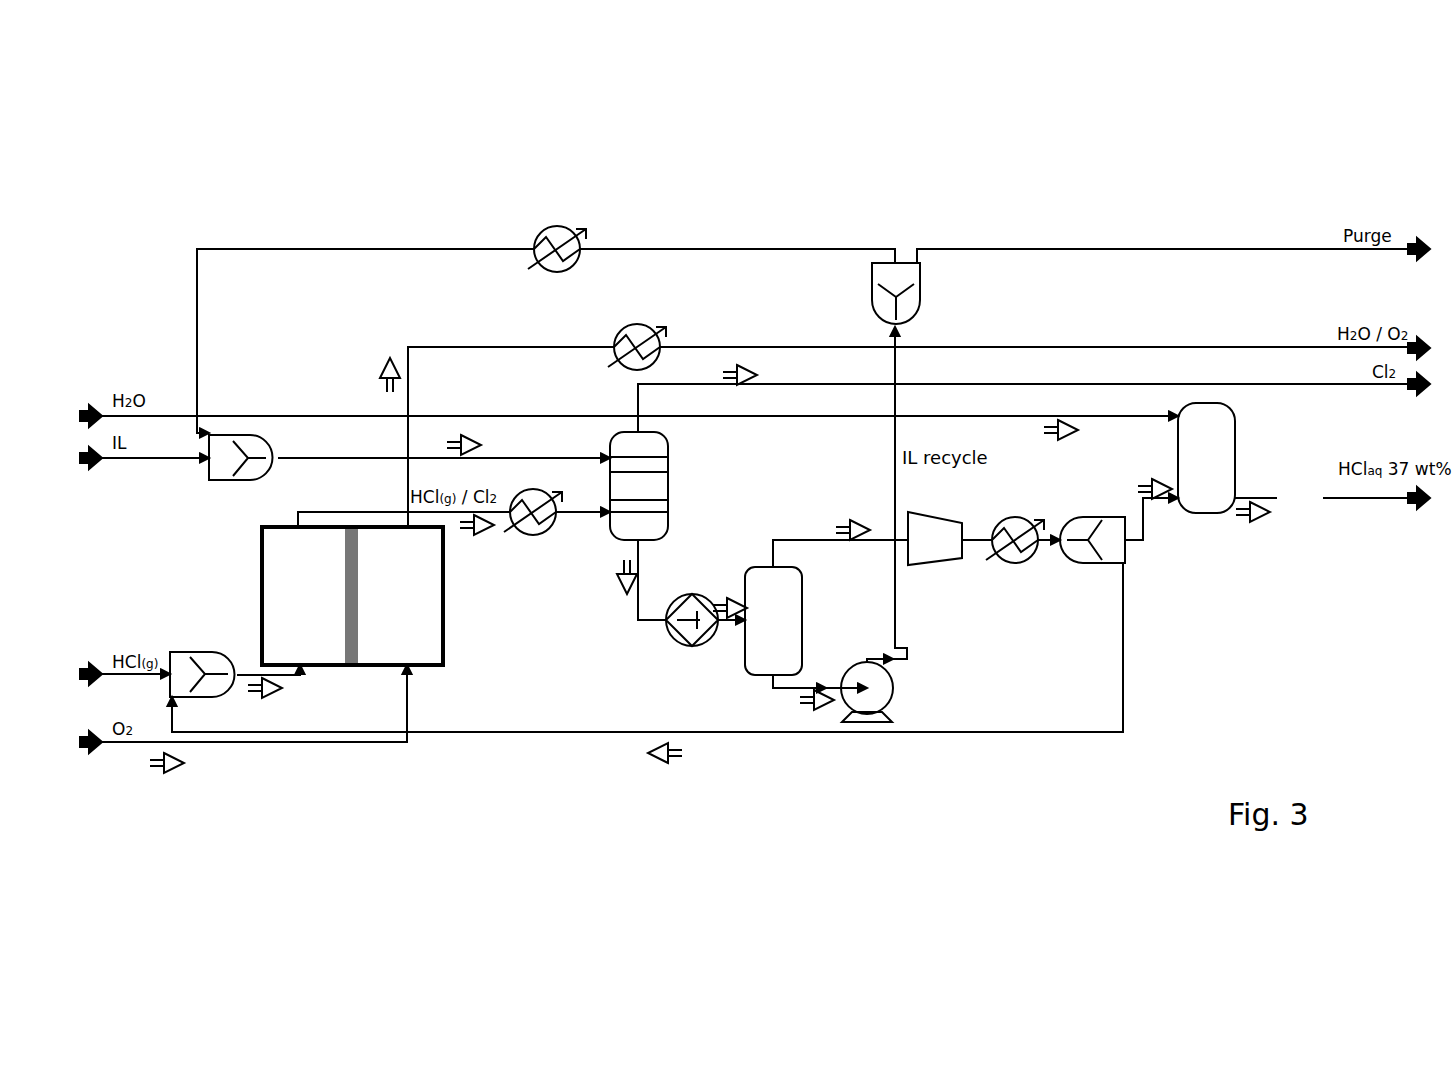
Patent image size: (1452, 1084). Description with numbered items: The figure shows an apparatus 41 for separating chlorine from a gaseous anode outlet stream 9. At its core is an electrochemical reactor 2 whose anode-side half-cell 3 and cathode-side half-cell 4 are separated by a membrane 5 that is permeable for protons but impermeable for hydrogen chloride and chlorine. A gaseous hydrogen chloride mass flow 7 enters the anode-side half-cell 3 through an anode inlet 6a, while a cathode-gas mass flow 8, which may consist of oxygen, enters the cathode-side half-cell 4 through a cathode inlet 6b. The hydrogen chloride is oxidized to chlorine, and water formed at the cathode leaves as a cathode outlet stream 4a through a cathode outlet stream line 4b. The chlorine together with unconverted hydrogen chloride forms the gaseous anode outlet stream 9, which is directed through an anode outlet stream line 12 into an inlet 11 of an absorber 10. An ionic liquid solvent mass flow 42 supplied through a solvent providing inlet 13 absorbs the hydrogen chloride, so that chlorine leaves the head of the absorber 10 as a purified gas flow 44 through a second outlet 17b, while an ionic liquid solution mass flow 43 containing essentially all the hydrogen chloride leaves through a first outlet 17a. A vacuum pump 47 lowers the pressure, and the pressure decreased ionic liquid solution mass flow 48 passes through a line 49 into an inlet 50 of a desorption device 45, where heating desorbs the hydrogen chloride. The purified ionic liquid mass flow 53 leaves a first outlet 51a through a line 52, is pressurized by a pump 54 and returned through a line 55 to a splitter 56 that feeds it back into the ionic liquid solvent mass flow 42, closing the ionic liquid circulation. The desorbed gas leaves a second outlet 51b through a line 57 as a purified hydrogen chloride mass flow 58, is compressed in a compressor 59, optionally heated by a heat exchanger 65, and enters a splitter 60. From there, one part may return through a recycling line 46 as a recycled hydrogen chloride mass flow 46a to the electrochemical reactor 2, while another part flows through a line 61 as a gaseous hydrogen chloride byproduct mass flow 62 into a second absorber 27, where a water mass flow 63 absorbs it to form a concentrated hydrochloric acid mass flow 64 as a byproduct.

The apparatus 41 is at (1110, 150).
The electrochemical reactor 2 is at (479, 643).
The anode-side half-cell 3 is at (304, 596).
The cathode-side half-cell 4 is at (399, 596).
The cathode outlet stream 4a is at (382, 380).
The cathode outlet stream line 4b is at (408, 365).
The membrane 5 is at (352, 667).
The anode inlet 6a is at (302, 668).
The cathode inlet 6b is at (410, 668).
The gaseous hydrogen chloride mass flow 7 is at (262, 696).
The cathode-gas mass flow 8 is at (167, 773).
The gaseous anode outlet stream 9 is at (477, 532).
The absorber 10 is at (639, 486).
The inlet 11 is at (605, 518).
The anode outlet stream line 12 is at (603, 510).
The solvent providing inlet 13 is at (604, 456).
The first outlet 17a is at (645, 540).
The second outlet 17b is at (655, 433).
The second absorber 27 is at (1206, 458).
The ionic liquid solvent mass flow 42 is at (462, 439).
The ionic liquid solution mass flow 43 is at (617, 579).
The purified gas flow 44 is at (735, 370).
The desorption device 45 is at (773, 621).
The recycling line 46 is at (174, 720).
The recycled hydrogen chloride mass flow 46a is at (672, 762).
The vacuum pump 47 is at (672, 634).
The pressure decreased ionic liquid solution mass flow 48 is at (730, 599).
The line 49 is at (720, 630).
The inlet 50 is at (745, 625).
The first outlet 51a is at (773, 680).
The second outlet 51b is at (772, 565).
The line 52 is at (808, 687).
The purified ionic liquid mass flow 53 is at (817, 709).
The pump 54 is at (893, 683).
The line 55 is at (897, 602).
The splitter 56 is at (214, 481).
The line 57 is at (790, 538).
The purified hydrogen chloride mass flow 58 is at (846, 524).
The compressor 59 is at (935, 538).
The splitter 60 is at (1087, 563).
The line 61 is at (1143, 545).
The gaseous hydrogen chloride byproduct mass flow 62 is at (1152, 482).
The water mass flow 63 is at (1060, 440).
The concentrated hydrochloric acid mass flow 64 is at (1253, 521).
The heat exchanger 65 is at (1005, 563).